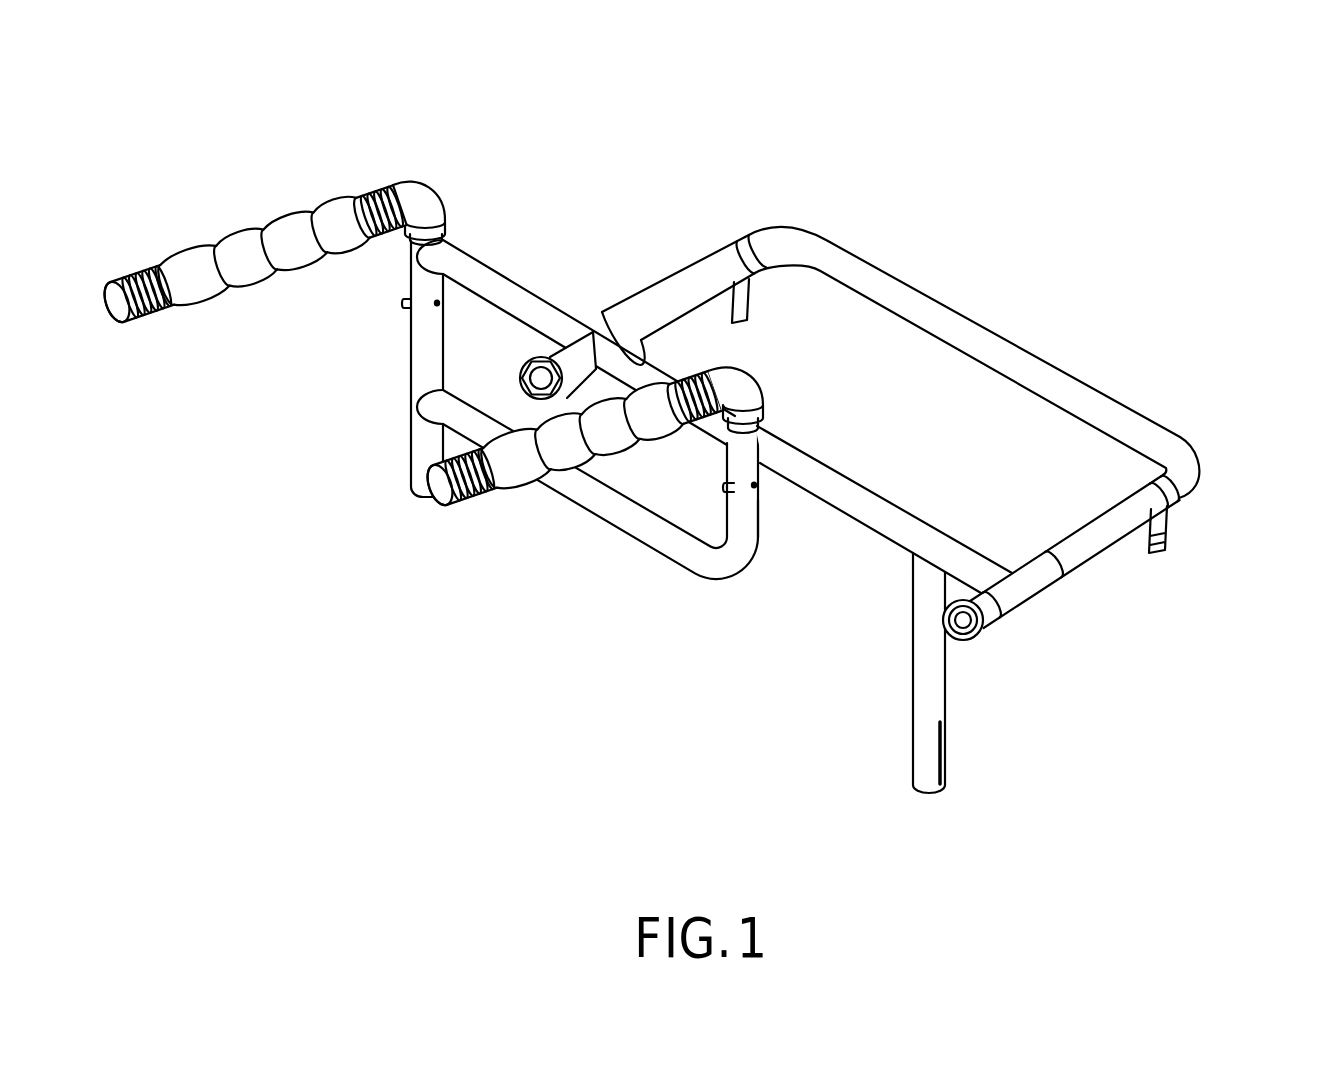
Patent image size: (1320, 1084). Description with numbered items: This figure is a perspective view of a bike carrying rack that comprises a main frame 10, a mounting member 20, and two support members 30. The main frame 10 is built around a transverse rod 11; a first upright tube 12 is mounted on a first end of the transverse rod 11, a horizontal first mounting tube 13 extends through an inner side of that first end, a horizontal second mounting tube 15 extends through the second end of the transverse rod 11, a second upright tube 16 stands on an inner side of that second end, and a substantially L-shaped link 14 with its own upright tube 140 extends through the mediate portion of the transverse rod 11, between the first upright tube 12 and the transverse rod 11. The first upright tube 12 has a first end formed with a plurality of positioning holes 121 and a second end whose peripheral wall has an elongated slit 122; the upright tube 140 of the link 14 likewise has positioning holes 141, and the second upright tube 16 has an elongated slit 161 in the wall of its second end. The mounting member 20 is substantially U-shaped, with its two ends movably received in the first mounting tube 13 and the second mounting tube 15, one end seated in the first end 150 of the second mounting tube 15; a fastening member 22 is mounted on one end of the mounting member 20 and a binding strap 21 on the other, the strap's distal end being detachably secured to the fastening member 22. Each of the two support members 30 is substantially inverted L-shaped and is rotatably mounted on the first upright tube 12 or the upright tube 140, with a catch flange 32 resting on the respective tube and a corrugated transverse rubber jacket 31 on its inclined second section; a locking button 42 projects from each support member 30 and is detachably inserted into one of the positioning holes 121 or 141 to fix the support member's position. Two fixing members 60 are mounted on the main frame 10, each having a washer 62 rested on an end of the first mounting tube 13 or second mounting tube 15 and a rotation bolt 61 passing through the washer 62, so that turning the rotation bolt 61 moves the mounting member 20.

The main frame 10 is at (938, 512).
The transverse rod 11 is at (830, 483).
The first upright tube 12 is at (422, 358).
The positioning holes 121 is at (440, 303).
The elongated slit 122 is at (440, 447).
The first mounting tube 13 is at (621, 316).
The link 14 is at (587, 495).
The upright tube 140 is at (740, 515).
The positioning holes 141 is at (759, 488).
The second mounting tube 15 is at (1042, 594).
The first end 150 is at (1037, 563).
The second upright tube 16 is at (922, 704).
The elongated slit 161 is at (947, 751).
The mounting member 20 is at (1007, 328).
The binding strap 21 is at (742, 248).
The fastening member 22 is at (1168, 550).
The support members 30 is at (282, 197).
The corrugated transverse rubber jacket 31 is at (217, 252).
The catch flange 32 is at (447, 235).
The locking button 42 is at (406, 303).
The fixing members 60 is at (513, 391).
The rotation bolt 61 is at (943, 612).
The washer 62 is at (1038, 611).